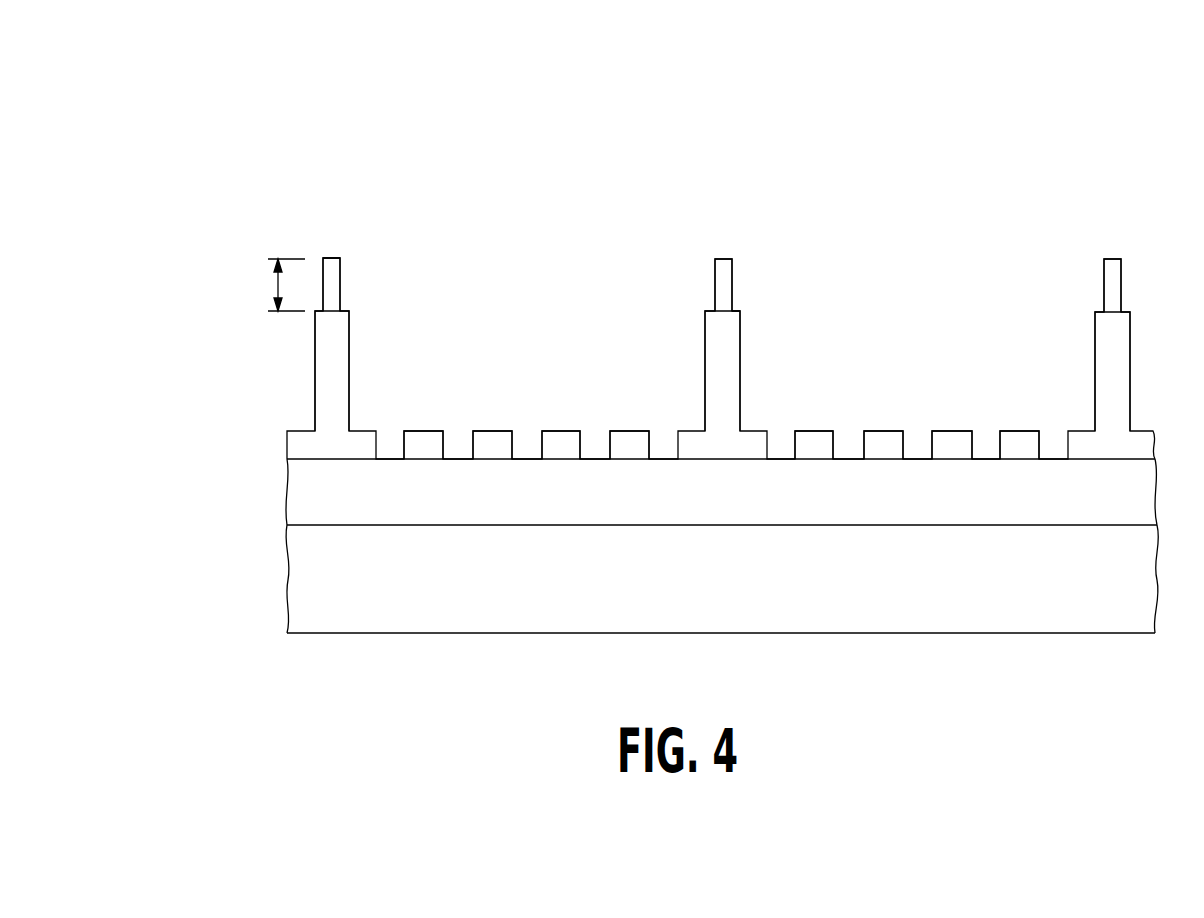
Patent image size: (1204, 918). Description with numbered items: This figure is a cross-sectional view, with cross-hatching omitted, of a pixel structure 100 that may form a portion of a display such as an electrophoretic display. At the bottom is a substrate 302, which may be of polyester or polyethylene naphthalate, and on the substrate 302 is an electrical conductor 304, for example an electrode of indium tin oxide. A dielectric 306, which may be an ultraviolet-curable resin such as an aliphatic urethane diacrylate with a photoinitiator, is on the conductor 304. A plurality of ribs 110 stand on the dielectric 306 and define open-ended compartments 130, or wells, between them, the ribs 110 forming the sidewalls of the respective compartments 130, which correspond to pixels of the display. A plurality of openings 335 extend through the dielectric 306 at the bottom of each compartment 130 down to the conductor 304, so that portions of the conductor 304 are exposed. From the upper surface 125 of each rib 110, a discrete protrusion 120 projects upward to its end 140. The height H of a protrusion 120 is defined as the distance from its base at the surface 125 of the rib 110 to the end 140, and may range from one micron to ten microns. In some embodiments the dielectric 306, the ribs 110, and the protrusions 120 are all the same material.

The pixel structure 100 is at (897, 128).
The ribs 110 is at (335, 347).
The protrusions 120 is at (335, 280).
The surface 125 is at (737, 304).
The compartments 130 is at (570, 318).
The end 140 is at (332, 257).
The substrate 302 is at (827, 601).
The electrical conductor 304 is at (827, 507).
The dielectric 306 is at (293, 443).
The openings 335 is at (453, 445).
The height H is at (273, 288).